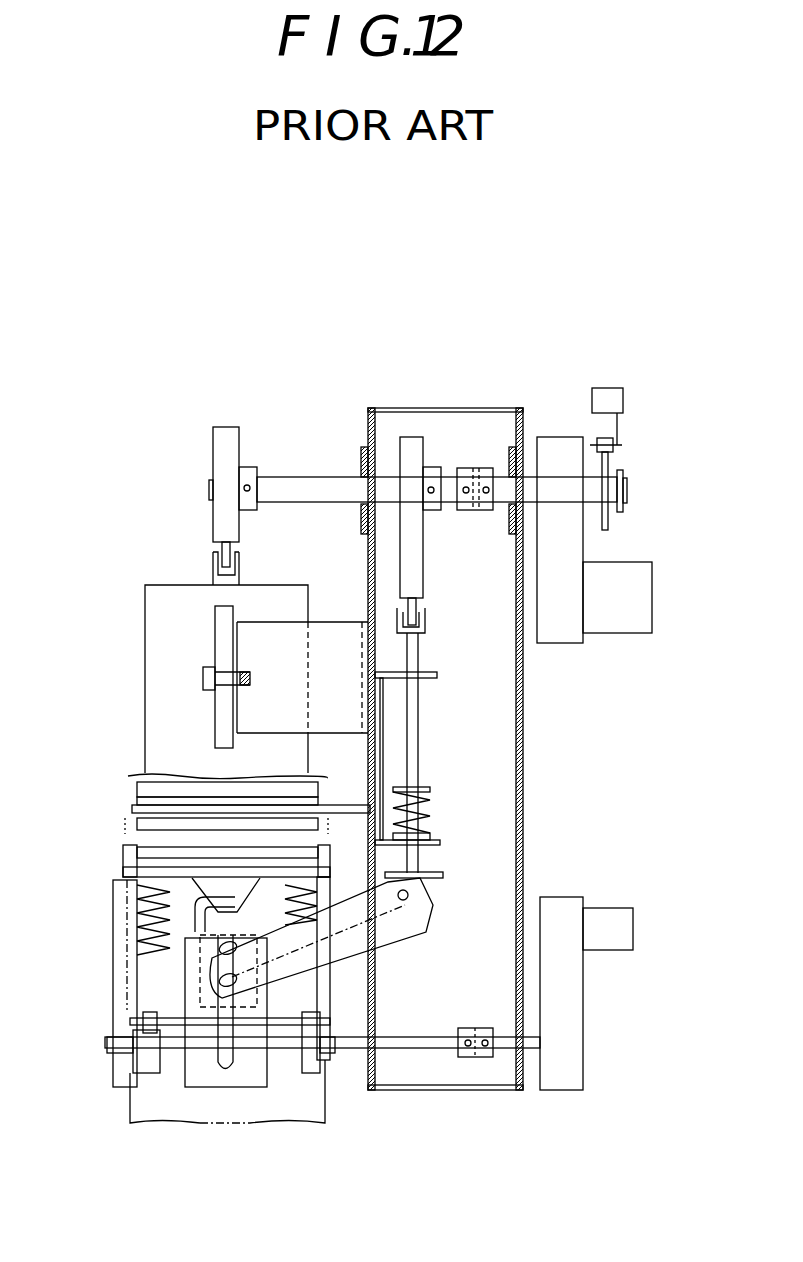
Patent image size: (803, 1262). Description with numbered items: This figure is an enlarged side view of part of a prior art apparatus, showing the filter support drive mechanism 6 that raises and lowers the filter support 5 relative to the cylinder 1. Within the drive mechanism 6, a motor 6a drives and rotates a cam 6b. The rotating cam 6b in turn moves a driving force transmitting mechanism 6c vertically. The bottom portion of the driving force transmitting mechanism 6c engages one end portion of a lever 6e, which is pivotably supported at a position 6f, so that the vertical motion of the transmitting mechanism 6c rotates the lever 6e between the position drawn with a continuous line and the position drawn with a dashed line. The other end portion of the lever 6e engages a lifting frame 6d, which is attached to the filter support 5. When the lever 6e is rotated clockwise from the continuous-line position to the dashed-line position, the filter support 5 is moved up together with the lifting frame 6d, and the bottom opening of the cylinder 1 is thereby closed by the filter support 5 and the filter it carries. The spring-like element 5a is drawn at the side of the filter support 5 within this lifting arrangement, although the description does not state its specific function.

The cylinder 1 is at (145, 628).
The filter support 5 is at (150, 838).
The spring 5a is at (120, 918).
The filter support drive mechanism 6 is at (528, 388).
The motor 6a is at (627, 636).
The cam 6b is at (423, 563).
The driving force transmitting mechanism 6c is at (418, 744).
The lifting frame 6d is at (198, 1040).
The lever 6e is at (413, 925).
The pivot position of lever 6f is at (342, 955).